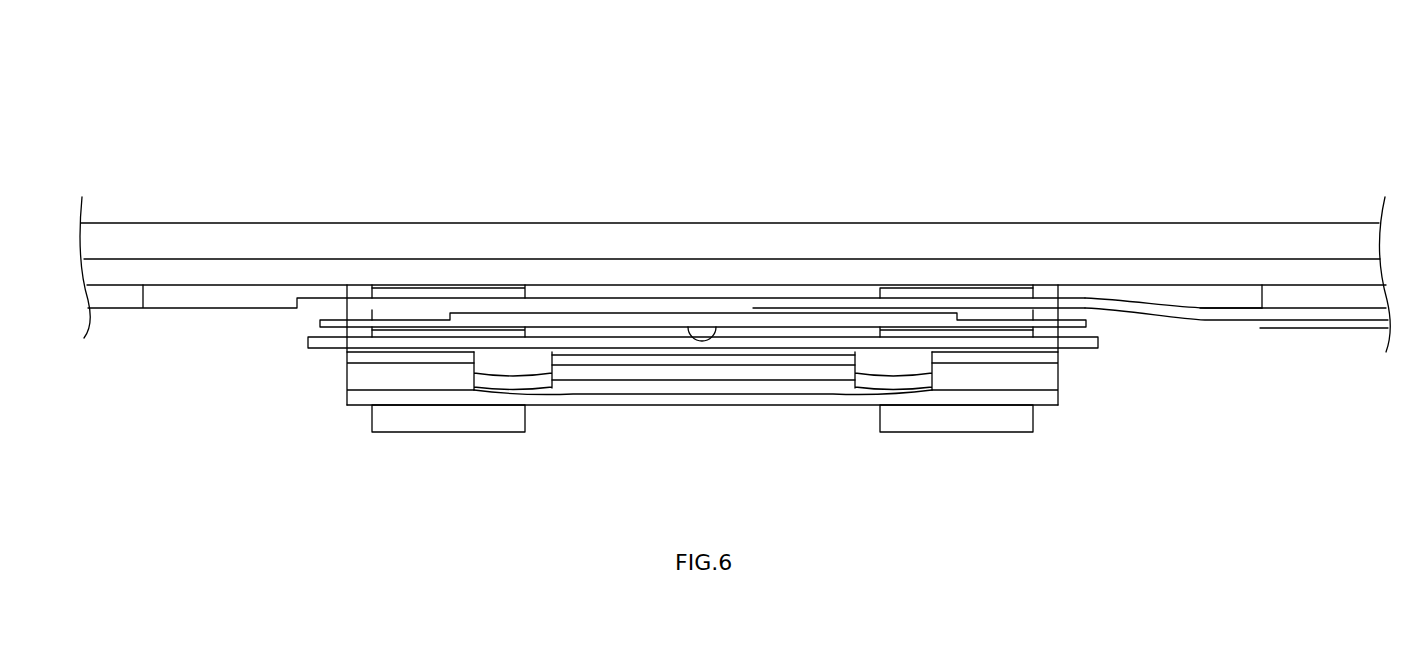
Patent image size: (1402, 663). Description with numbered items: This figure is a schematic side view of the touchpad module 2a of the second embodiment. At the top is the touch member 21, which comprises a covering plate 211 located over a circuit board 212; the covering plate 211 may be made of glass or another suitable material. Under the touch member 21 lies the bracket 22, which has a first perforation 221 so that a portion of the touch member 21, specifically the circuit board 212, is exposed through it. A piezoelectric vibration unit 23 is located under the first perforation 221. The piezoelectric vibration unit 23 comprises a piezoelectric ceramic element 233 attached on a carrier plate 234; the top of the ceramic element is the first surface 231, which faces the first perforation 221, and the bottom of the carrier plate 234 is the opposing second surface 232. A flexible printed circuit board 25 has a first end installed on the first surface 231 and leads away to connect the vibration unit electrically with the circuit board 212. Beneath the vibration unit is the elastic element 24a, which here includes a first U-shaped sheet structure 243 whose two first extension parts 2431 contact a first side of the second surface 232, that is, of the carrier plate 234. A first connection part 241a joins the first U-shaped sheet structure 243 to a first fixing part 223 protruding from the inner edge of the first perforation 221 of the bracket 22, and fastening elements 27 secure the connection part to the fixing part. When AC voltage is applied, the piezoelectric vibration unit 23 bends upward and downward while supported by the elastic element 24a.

The touchpad module 2a is at (1237, 100).
The touch member 21 is at (735, 249).
The covering plate 211 is at (972, 185).
The circuit board 212 is at (880, 272).
The bracket 22 is at (1305, 297).
The first perforation 221 is at (1200, 292).
The piezoelectric vibration unit 23 is at (176, 48).
The first surface 231 is at (586, 323).
The second surface 232 is at (677, 332).
The piezoelectric ceramic element 233 is at (500, 312).
The carrier plate 234 is at (765, 344).
The elastic element 24a is at (318, 82).
The first connection part 241a is at (1027, 397).
The first U-shaped sheet structure 243 is at (703, 387).
The first extension part 2431 is at (512, 358).
The first fixing part 223 is at (1047, 381).
The flexible printed circuit board 25 is at (1203, 317).
The fastening element 27 is at (466, 418).